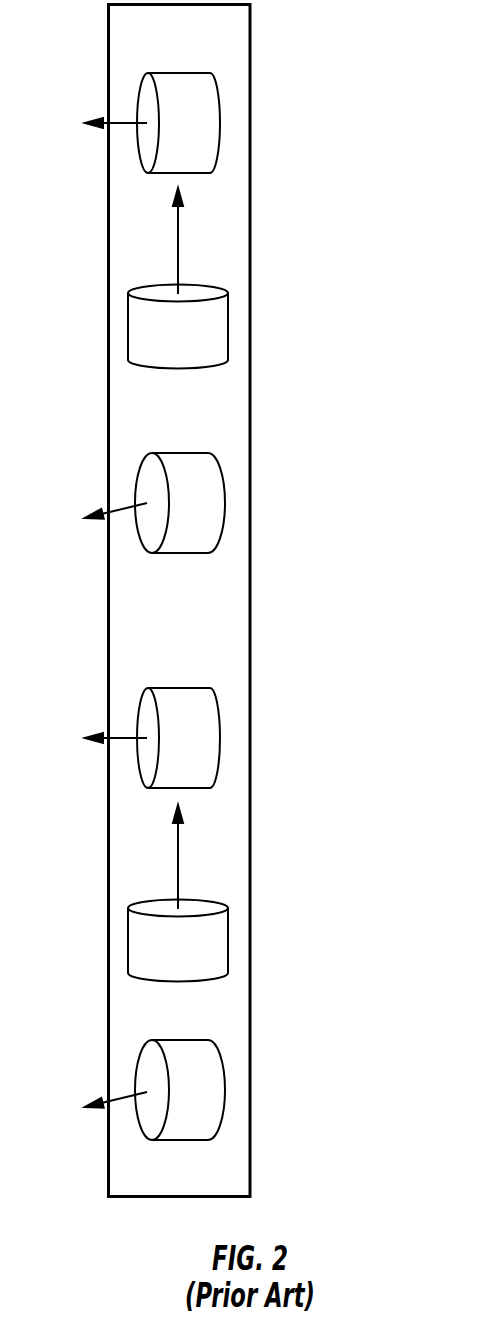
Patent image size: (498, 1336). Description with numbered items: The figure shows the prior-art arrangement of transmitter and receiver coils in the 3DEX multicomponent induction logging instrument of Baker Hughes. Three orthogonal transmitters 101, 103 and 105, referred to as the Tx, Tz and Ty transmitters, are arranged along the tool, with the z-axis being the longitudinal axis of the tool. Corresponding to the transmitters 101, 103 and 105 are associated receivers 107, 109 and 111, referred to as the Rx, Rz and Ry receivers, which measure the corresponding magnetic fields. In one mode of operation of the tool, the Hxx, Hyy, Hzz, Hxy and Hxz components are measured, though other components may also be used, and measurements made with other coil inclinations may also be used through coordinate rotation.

The transmitter 101 is at (333, 105).
The transmitter 103 is at (333, 313).
The transmitter 105 is at (333, 485).
The receiver 107 is at (333, 718).
The receiver 109 is at (333, 920).
The receiver 111 is at (333, 1070).